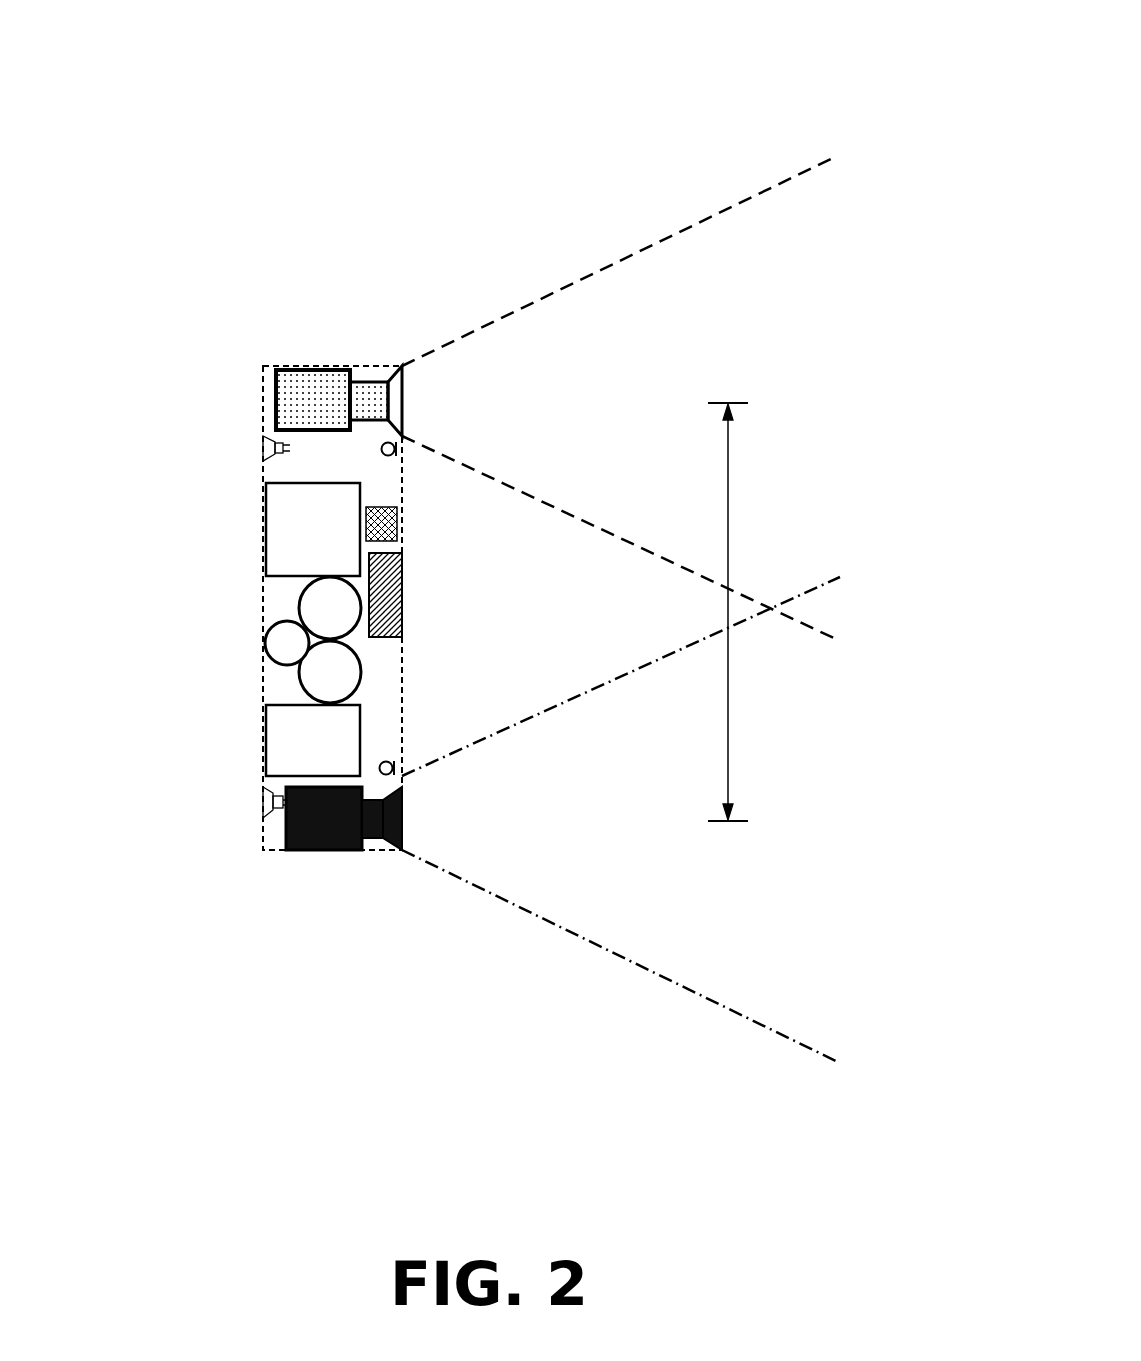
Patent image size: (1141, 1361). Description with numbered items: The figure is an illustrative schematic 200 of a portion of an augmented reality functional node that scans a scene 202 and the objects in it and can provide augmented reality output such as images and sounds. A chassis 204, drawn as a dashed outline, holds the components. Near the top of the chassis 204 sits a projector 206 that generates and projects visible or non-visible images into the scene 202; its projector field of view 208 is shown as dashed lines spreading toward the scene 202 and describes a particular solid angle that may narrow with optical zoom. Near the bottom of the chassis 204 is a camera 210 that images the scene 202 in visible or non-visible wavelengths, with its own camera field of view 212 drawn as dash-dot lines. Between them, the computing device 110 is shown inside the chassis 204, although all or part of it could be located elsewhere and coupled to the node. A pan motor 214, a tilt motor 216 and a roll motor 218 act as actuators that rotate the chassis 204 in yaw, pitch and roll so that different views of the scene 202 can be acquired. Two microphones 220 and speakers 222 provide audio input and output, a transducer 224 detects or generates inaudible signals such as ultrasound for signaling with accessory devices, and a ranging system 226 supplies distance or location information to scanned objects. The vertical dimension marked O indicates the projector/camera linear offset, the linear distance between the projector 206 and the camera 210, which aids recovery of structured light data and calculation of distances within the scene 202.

The schematic 200 is at (786, 30).
The scene 202 is at (867, 609).
The chassis 204 is at (331, 366).
The projector 206 is at (312, 397).
The projector field of view 208 is at (618, 250).
The camera 210 is at (285, 851).
The camera field of view 212 is at (569, 944).
The pan motor 214 is at (299, 600).
The tilt motor 216 is at (300, 680).
The roll motor 218 is at (265, 643).
The microphone 220 is at (397, 446).
The speaker 222 is at (265, 803).
The transducer 224 is at (395, 513).
The ranging system 226 is at (393, 590).
The computing device 110 is at (312, 528).